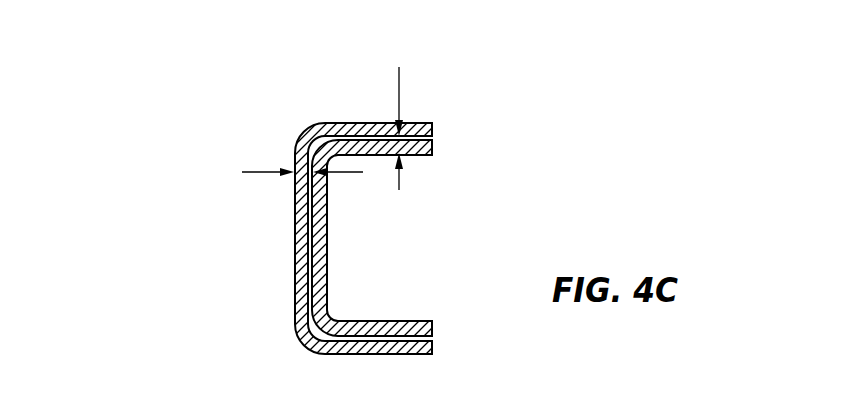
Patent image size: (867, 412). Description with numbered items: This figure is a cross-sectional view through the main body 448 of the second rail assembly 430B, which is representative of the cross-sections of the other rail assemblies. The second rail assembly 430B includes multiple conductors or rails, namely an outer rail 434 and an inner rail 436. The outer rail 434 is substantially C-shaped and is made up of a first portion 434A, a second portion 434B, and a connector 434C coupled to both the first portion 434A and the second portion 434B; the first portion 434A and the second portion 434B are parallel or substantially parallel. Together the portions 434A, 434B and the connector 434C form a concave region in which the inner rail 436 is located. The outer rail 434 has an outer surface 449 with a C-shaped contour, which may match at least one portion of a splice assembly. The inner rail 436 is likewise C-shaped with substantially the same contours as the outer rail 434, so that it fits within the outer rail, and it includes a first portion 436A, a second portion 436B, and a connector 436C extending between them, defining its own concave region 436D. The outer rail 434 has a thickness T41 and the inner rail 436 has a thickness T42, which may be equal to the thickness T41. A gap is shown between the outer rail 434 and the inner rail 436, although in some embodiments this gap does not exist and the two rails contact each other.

The second rail assembly 430B is at (468, 94).
The outer rail 434 is at (282, 211).
The first portion 434A is at (372, 122).
The second portion 434B is at (367, 354).
The connector 434C is at (295, 238).
The inner rail 436 is at (422, 314).
The first portion 436A is at (417, 155).
The second portion 436B is at (352, 319).
The connector 436C is at (328, 207).
The concave region 436D is at (453, 238).
The main body 448 is at (296, 304).
The outer surface 449 is at (294, 136).
The thickness T41 is at (260, 170).
The thickness T42 is at (398, 118).